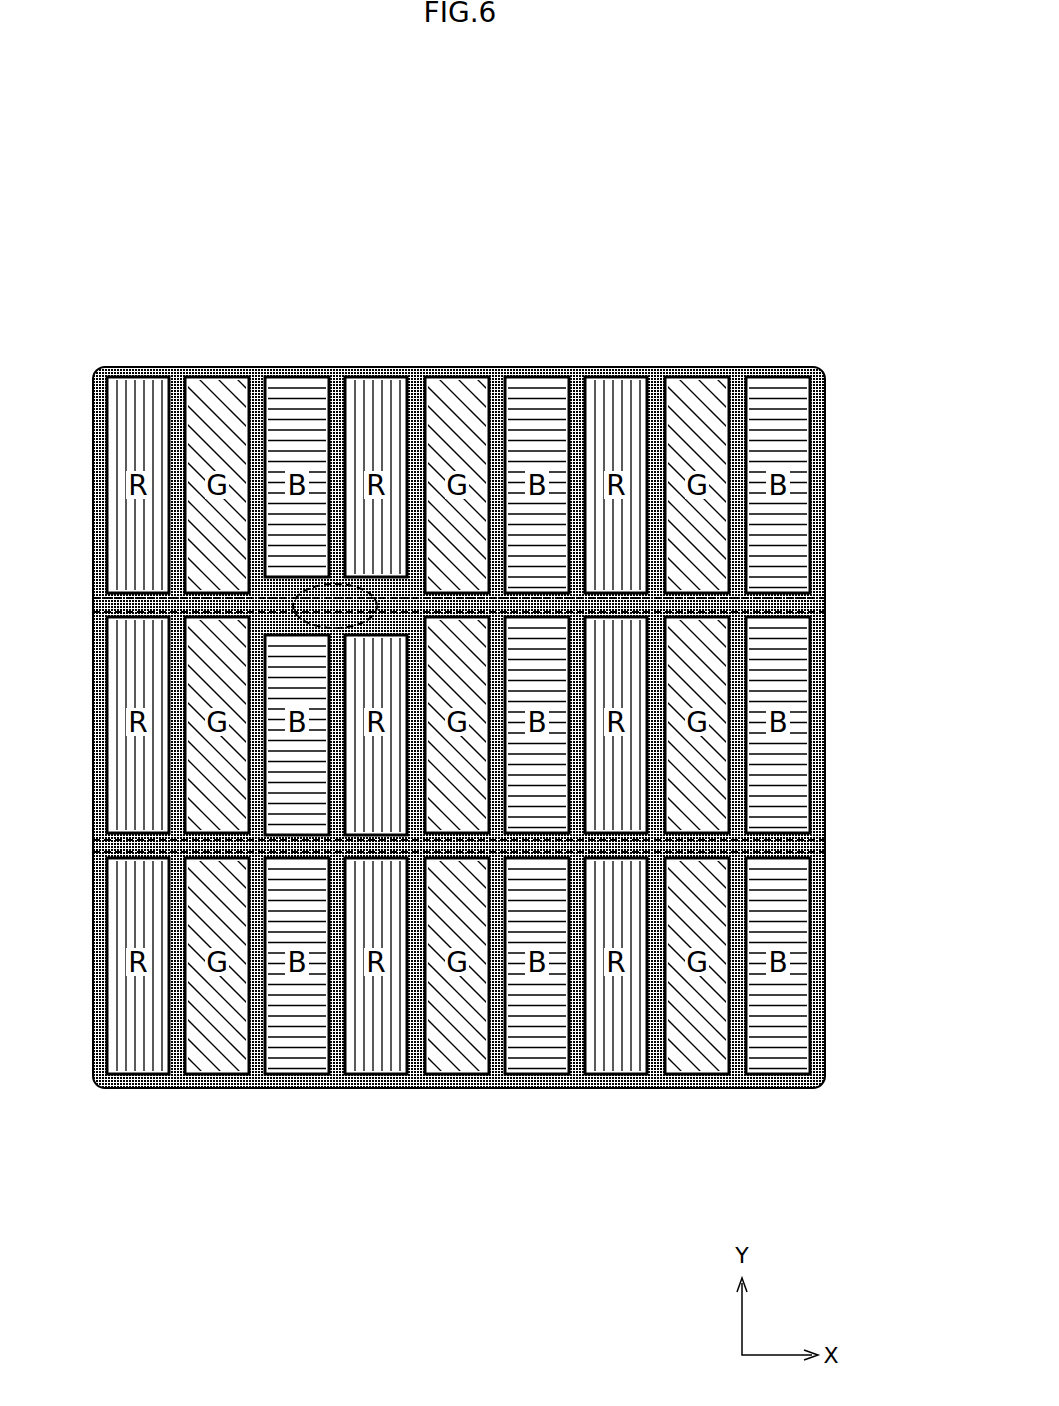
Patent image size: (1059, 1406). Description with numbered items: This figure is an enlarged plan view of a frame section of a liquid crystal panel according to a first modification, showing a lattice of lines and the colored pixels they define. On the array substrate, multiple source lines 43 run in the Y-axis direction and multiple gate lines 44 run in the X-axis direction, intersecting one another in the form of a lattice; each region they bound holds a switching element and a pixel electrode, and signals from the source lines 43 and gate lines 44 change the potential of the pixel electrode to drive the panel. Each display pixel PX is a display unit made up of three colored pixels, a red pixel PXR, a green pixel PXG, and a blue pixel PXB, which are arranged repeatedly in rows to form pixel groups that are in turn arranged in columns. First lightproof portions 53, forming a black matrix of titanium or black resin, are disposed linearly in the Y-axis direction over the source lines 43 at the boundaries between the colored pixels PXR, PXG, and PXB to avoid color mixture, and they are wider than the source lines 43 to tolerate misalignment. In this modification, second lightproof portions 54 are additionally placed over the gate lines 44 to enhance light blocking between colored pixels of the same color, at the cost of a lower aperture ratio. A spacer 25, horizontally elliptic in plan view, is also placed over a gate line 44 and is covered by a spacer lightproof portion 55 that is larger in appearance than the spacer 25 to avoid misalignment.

The display pixel PX is at (135, 263).
The red pixel PXR is at (144, 405).
The green pixel PXG is at (218, 403).
The blue pixel PXB is at (297, 417).
The first lightproof portion 53 is at (737, 385).
The second lightproof portion 54 is at (778, 606).
The spacer lightproof portion 55 is at (429, 727).
The source line 43 is at (761, 410).
The gate line 44 is at (819, 725).
The spacer 25 is at (302, 620).